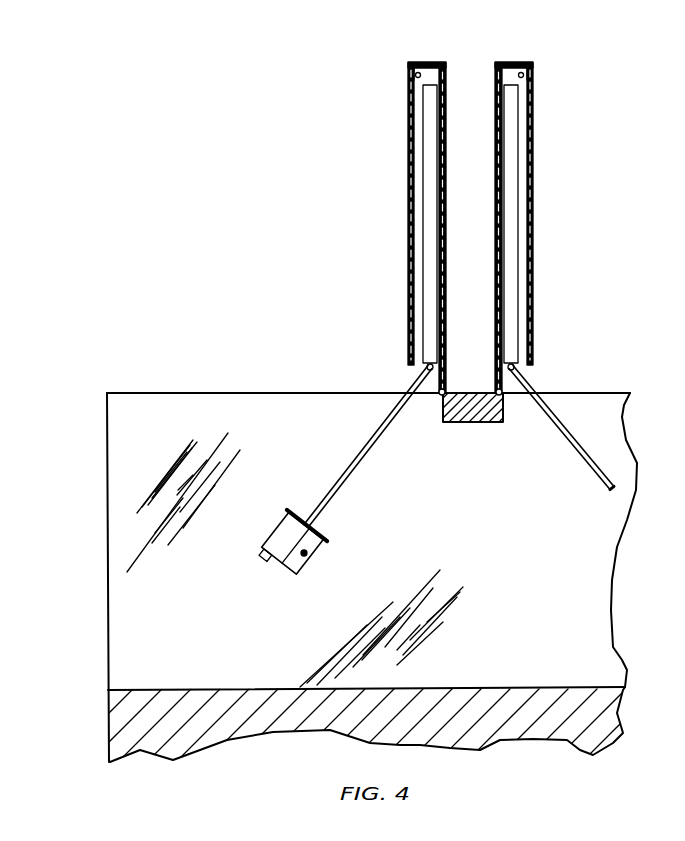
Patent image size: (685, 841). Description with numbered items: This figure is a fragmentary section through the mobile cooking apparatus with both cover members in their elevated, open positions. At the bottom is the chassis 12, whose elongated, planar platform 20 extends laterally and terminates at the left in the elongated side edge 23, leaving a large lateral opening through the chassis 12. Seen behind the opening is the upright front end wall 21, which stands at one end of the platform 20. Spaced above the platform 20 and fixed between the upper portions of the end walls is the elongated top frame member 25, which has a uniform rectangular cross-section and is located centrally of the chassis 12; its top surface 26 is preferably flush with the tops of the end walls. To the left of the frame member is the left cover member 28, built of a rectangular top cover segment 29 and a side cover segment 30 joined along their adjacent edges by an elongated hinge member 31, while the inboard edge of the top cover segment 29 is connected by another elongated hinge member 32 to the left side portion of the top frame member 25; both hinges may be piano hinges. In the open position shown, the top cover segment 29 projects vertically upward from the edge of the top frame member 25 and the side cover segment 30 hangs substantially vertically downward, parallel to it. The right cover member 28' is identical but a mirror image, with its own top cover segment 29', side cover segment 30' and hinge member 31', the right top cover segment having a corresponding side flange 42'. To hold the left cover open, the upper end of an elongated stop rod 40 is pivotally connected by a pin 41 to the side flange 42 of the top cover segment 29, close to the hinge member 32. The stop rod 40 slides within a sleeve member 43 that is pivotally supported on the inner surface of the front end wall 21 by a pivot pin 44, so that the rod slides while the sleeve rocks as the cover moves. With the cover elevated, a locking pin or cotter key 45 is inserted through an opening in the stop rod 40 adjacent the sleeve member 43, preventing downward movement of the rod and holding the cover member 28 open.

The chassis 12 is at (600, 708).
The platform 20 is at (366, 673).
The front end wall 21 is at (522, 581).
The left side edge 23 is at (81, 577).
The top frame member 25 is at (473, 423).
The top surface 26 is at (477, 364).
The left cover member 28 is at (400, 91).
The right cover member 28' is at (540, 91).
The top cover segment 29 is at (466, 211).
The top cover segment 29' is at (482, 228).
The side cover segment 30 is at (384, 214).
The side cover segment 30' is at (556, 214).
The hinge member 31 is at (388, 73).
The hinge member 31' is at (545, 71).
The hinge member 32 is at (432, 391).
The stop rod 40 is at (369, 451).
The pin 41 is at (426, 367).
The side flange 42 is at (450, 224).
The side flange 42' is at (542, 224).
The sleeve member 43 is at (284, 544).
The pivot pin 44 is at (308, 555).
The locking pin 45 is at (296, 507).